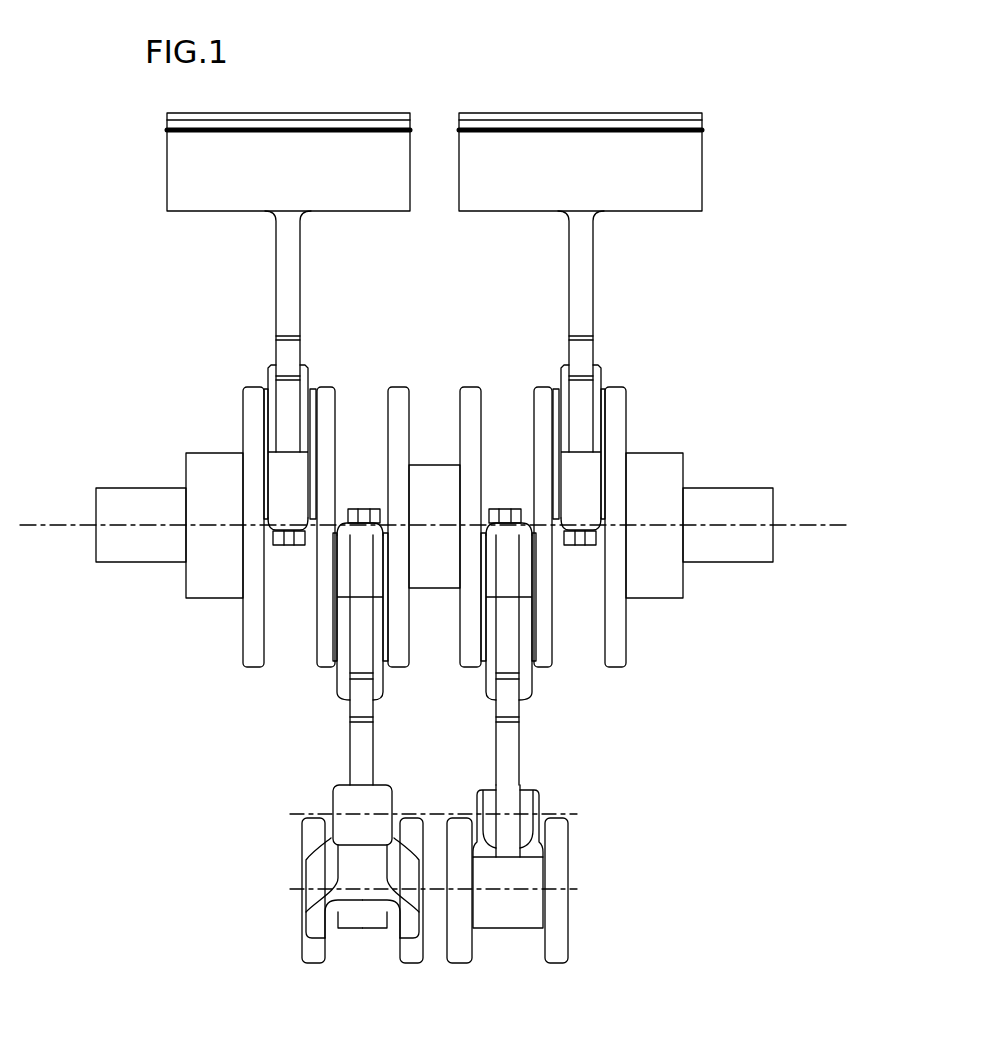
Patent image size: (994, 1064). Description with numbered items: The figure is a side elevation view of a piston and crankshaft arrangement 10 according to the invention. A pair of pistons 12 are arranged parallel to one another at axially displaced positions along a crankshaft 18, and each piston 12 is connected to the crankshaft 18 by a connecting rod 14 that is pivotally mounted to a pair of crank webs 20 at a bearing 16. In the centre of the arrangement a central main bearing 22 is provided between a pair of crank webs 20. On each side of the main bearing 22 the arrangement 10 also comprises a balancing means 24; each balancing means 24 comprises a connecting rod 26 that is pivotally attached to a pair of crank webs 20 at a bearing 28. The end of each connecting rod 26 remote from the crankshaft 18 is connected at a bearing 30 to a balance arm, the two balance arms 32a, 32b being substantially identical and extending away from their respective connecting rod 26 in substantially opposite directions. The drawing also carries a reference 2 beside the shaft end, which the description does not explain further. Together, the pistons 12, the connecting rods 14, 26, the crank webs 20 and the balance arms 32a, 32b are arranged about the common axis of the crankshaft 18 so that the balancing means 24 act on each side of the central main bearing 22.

The piston and crankshaft arrangement 10 is at (655, 102).
The piston 12 is at (190, 188).
The connecting rod 14 is at (288, 310).
The bearing 16 is at (160, 388).
The crankshaft 18 is at (113, 510).
The crank web 20 is at (388, 387).
The central main bearing 22 is at (430, 433).
The balancing means 24 is at (270, 775).
The connecting rod 26 is at (360, 765).
The bearing 28 is at (308, 643).
The bearing 30 is at (425, 923).
The balance arm 32a is at (342, 837).
The balance arm 32b is at (558, 952).
The crankshaft axis direction 2 is at (787, 555).